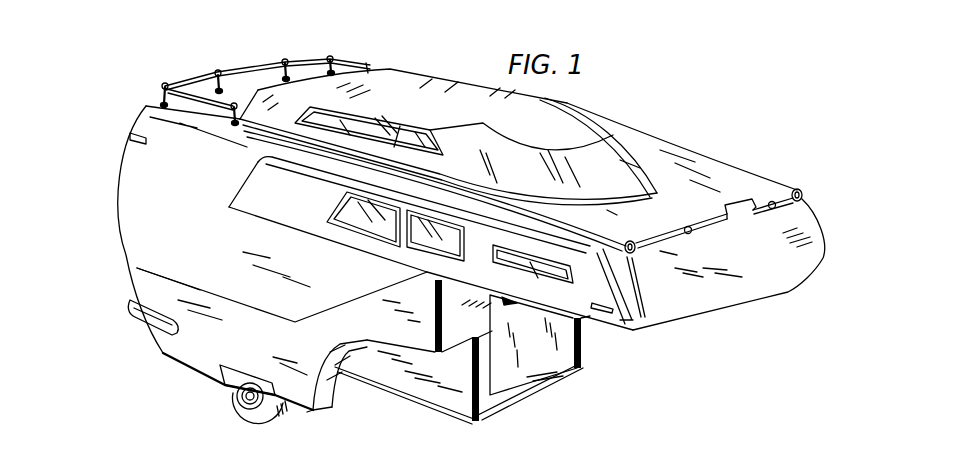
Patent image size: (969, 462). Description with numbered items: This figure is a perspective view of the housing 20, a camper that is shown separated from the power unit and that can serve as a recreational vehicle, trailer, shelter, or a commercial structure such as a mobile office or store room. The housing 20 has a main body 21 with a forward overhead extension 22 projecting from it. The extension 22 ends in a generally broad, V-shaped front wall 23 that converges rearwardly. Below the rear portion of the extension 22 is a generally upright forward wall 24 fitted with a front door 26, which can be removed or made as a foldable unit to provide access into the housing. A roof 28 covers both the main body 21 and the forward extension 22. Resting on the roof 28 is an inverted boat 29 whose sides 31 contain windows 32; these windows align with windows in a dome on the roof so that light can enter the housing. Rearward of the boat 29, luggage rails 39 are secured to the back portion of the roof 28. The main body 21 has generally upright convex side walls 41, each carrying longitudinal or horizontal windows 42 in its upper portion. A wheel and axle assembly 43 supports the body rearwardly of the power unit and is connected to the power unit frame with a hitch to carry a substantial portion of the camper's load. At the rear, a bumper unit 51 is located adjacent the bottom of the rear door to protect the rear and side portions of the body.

The housing 20 is at (641, 83).
The main body 21 is at (142, 194).
The forward overhead extension 22 is at (765, 183).
The front wall 23 is at (745, 282).
The forward wall 24 is at (490, 403).
The front door 26 is at (542, 358).
The roof 28 is at (652, 147).
The inverted boat 29 is at (429, 75).
The sides 31 is at (510, 135).
The windows 32 is at (357, 128).
The luggage rails 39 is at (272, 72).
The side walls 41 is at (222, 250).
The windows 42 is at (357, 210).
The wheel and axle assembly 43 is at (280, 415).
The bumper unit 51 is at (133, 319).